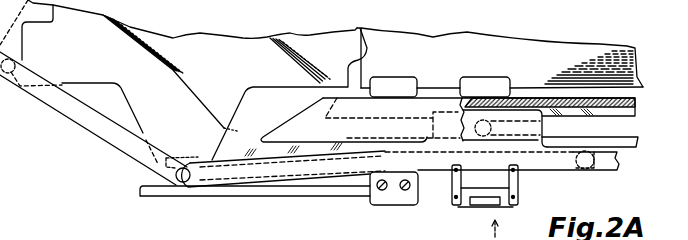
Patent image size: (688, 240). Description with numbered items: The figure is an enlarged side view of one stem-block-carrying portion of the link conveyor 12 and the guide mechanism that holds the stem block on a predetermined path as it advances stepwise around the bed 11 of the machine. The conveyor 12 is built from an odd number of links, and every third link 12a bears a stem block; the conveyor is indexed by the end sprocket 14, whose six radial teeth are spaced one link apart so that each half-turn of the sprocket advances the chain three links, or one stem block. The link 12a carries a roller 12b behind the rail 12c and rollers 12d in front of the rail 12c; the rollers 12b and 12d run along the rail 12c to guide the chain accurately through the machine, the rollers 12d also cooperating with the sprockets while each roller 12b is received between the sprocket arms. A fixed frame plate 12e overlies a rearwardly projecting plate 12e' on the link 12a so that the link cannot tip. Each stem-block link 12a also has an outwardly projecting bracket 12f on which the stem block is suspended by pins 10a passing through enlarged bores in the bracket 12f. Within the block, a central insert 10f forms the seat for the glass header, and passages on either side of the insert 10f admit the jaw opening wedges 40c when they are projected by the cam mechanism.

The end sprocket 14 is at (198, 63).
The conveyor 12 is at (98, 131).
The bed 11 is at (492, 62).
The rearwardly projecting plate 12e' is at (548, 81).
The fixed frame plate 12e is at (362, 120).
The roller 12b is at (542, 127).
The rail 12c is at (595, 137).
The link 12a is at (547, 163).
The roller 12d is at (418, 170).
The bracket 12f is at (527, 190).
The pin 10a is at (255, 213).
The insert 10f is at (170, 233).
The jaw opening wedge 40c is at (249, 233).